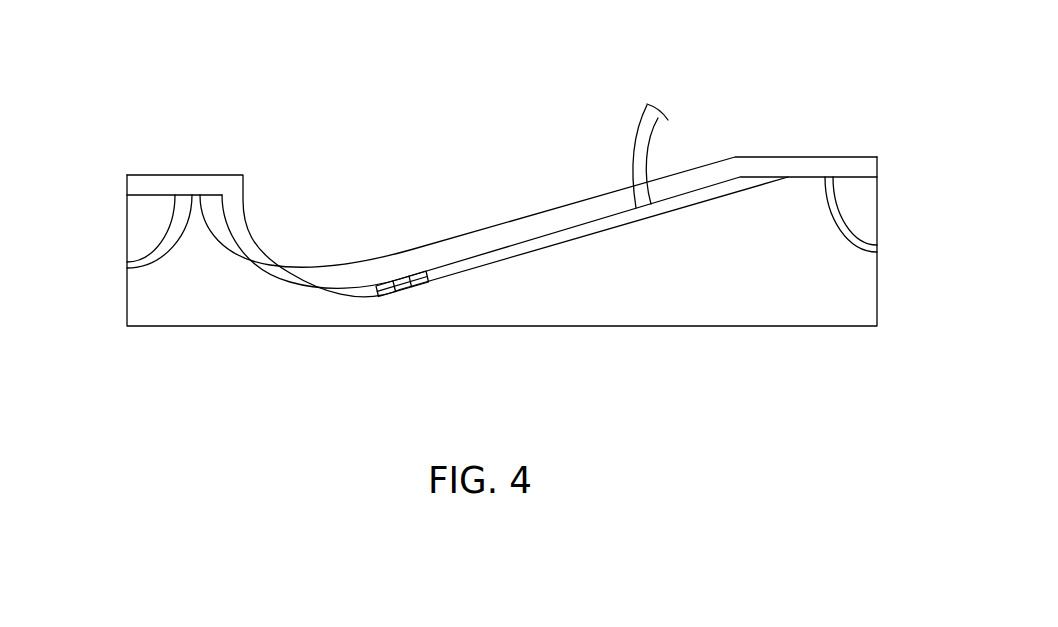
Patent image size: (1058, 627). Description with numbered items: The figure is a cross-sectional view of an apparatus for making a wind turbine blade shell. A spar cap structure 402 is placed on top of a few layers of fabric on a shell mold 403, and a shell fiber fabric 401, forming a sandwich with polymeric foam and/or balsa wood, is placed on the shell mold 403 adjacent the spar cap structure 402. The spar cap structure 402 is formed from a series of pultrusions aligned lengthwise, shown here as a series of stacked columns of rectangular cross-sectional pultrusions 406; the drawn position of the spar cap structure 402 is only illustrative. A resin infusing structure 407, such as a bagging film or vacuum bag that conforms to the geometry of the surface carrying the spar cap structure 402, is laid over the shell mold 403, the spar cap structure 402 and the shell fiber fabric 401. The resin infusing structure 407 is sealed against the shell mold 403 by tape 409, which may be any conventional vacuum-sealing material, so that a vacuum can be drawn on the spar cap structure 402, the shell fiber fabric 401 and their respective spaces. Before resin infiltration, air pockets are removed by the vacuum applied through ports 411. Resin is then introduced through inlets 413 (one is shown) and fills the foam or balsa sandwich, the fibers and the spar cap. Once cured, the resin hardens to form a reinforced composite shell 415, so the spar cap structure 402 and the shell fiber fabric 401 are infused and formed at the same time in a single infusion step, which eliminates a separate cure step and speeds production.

The shell fiber fabric 401 is at (688, 200).
The spar cap structure 402 is at (393, 297).
The shell mold 403 is at (709, 313).
The rectangular cross-sectional pultrusions 406 is at (417, 288).
The resin infusing structure 407 is at (208, 174).
The tape 409 is at (154, 195).
The ports 411 is at (147, 253).
The inlets 413 is at (650, 143).
The reinforced composite shell 415 is at (386, 114).